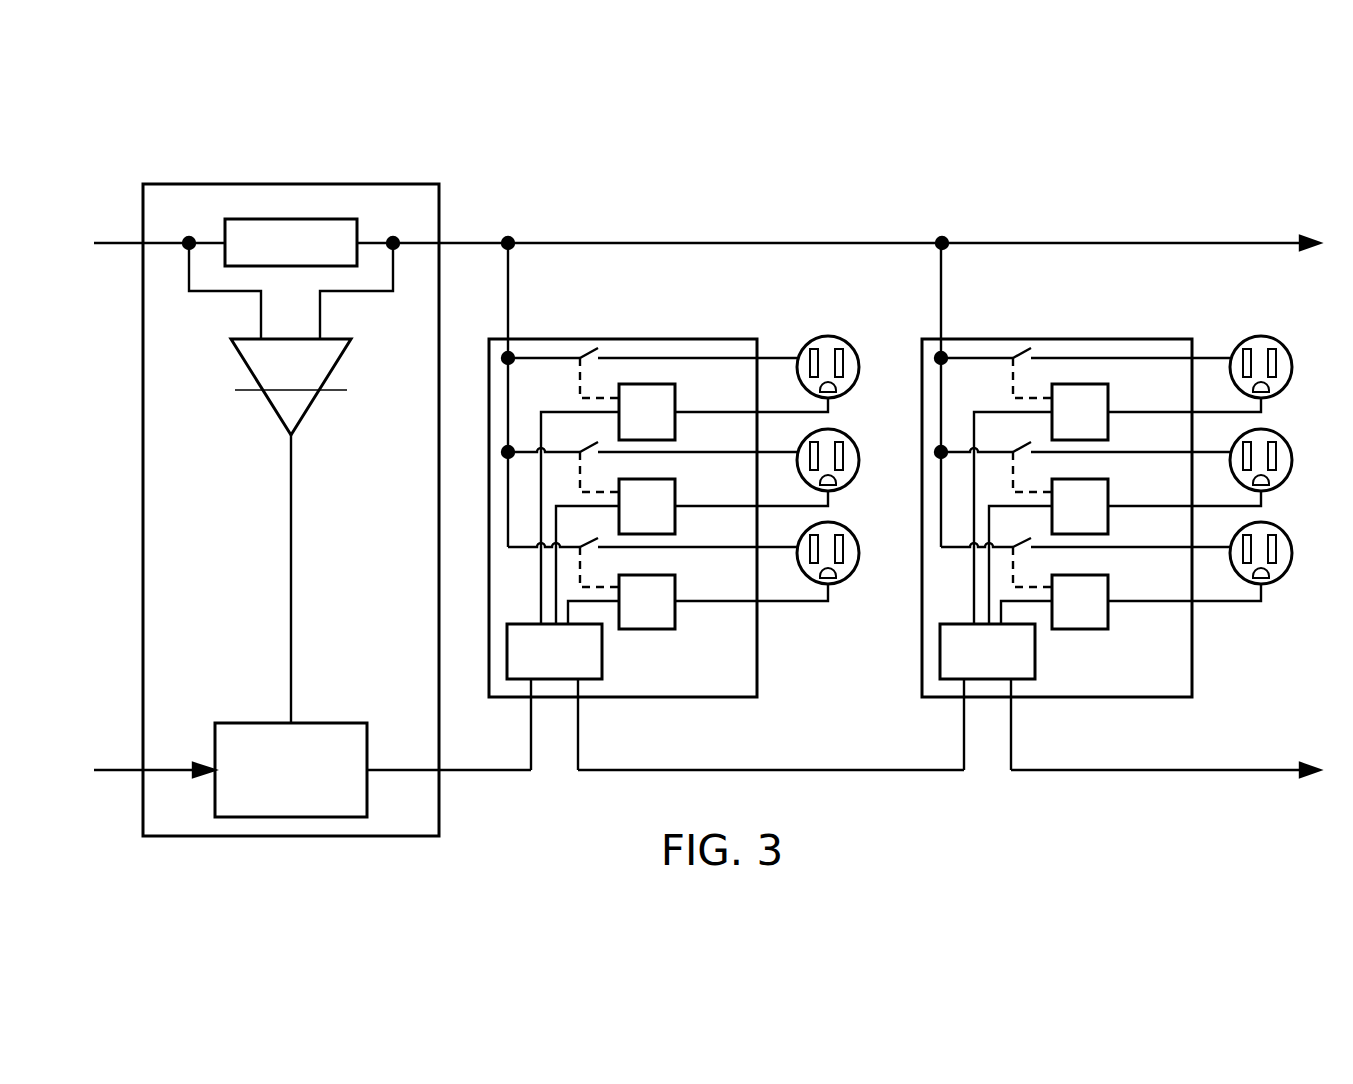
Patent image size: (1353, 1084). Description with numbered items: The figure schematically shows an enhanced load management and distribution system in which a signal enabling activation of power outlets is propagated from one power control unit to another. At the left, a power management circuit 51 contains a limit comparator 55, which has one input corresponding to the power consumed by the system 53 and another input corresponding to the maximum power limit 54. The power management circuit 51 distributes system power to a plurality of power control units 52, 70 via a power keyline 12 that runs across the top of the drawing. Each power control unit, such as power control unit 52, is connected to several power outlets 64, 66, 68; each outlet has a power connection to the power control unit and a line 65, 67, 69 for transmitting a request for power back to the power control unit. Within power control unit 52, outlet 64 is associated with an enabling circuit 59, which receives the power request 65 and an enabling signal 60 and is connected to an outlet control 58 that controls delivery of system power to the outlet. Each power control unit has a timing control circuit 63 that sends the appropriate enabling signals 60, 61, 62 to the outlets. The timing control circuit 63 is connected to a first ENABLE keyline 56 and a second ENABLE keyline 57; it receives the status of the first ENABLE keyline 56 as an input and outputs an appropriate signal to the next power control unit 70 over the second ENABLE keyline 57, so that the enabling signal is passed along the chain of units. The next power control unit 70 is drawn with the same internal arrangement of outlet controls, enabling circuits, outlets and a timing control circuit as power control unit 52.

The power keyline 12 is at (745, 242).
The power management circuit 51 is at (237, 183).
The power control unit 52 is at (700, 338).
The power consumed by the system 53 is at (240, 418).
The maximum power limit 54 is at (182, 768).
The limit comparator 55 is at (350, 722).
The first ENABLE keyline 56 is at (476, 768).
The second ENABLE keyline 57 is at (828, 768).
The outlet control 58 is at (590, 350).
The enabling circuit 59 is at (678, 403).
The enabling signal 60 is at (540, 563).
The enabling signal 61 is at (555, 587).
The enabling signal 62 is at (604, 602).
The timing control circuit 63 is at (545, 685).
The power outlet 64 is at (855, 350).
The power request line 65 is at (845, 404).
The power outlet 66 is at (855, 443).
The power request line 67 is at (845, 497).
The power outlet 68 is at (855, 540).
The power request line 69 is at (828, 600).
The power control unit 70 is at (1133, 338).